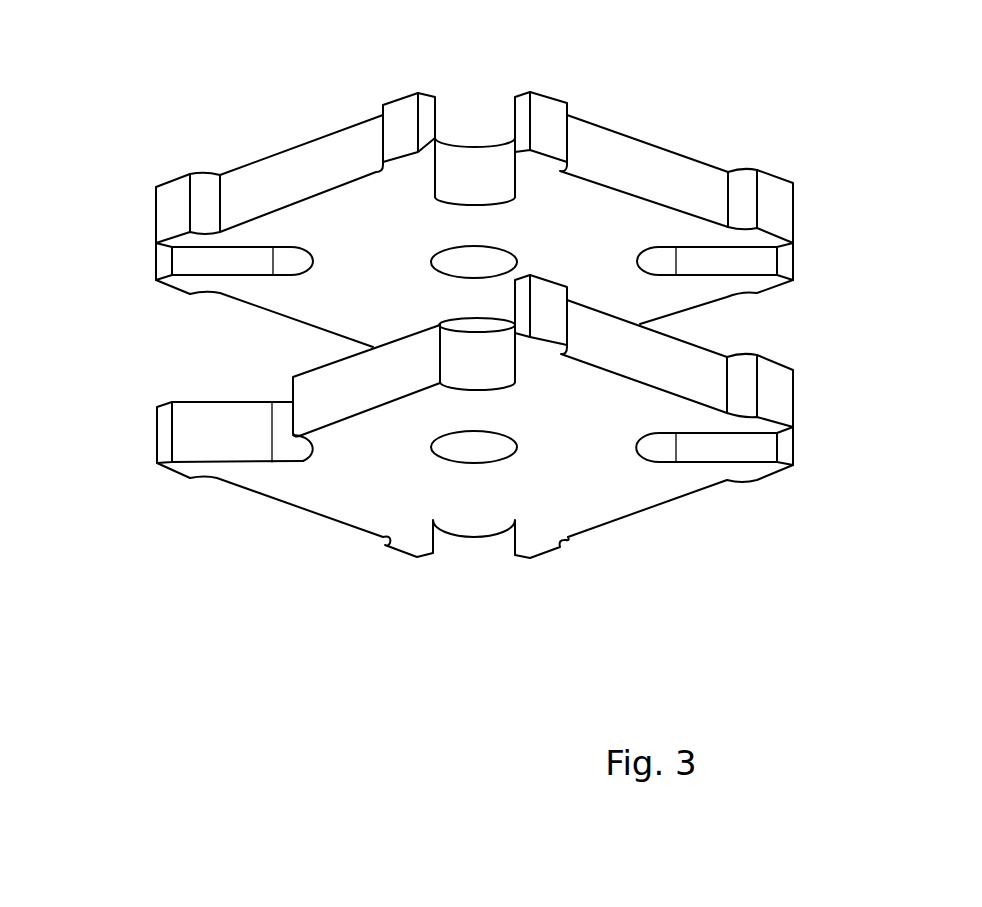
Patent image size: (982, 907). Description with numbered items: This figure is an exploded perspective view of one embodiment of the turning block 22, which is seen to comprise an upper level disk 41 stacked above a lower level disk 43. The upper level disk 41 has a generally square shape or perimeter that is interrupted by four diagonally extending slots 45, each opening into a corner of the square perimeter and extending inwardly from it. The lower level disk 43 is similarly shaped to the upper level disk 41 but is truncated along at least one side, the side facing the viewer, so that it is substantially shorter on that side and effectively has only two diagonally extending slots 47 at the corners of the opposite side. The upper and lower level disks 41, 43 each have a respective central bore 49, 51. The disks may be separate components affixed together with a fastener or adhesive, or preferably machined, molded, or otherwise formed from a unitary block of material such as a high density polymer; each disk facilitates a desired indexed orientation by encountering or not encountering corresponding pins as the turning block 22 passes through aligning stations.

The turning block 22 is at (107, 93).
The upper level disk 41 is at (657, 132).
The lower level disk 43 is at (657, 518).
The diagonally extending slots 45 is at (475, 118).
The diagonally extending slots 47 is at (752, 445).
The central bore 49 is at (473, 262).
The central bore 51 is at (475, 447).